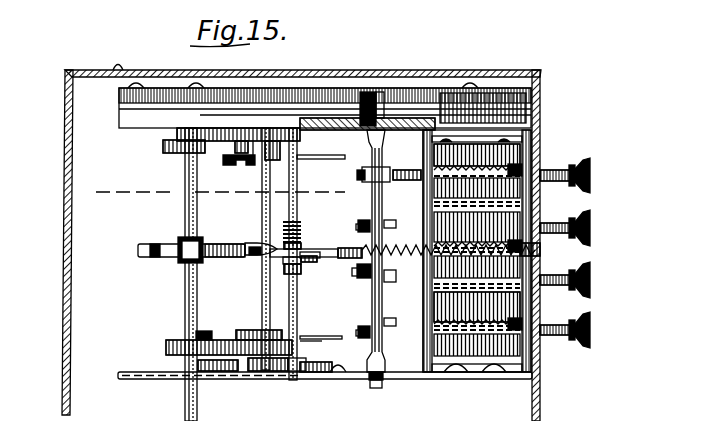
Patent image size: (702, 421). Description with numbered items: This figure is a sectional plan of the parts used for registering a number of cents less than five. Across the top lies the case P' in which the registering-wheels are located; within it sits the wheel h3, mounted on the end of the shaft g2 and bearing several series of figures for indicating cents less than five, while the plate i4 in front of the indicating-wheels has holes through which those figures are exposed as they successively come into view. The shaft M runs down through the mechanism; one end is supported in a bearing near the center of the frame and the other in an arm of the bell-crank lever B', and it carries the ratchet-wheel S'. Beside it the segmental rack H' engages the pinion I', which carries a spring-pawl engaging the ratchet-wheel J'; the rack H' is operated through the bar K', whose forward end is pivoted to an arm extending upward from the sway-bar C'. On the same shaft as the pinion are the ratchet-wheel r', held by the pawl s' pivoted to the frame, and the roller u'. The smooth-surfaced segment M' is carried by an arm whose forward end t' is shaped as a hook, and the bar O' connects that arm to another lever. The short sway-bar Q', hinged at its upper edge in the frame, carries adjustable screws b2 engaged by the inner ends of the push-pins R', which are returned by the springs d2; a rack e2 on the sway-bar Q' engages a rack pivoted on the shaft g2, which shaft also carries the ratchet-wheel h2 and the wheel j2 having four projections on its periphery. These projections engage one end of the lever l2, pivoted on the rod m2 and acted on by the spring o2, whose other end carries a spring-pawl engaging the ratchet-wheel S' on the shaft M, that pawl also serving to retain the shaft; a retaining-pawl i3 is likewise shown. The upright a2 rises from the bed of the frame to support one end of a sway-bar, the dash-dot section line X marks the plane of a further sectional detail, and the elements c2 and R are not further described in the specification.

The case P' is at (325, 106).
The shaft g2 is at (368, 96).
The plate i4 is at (382, 96).
The wheel h3 is at (412, 100).
The shaft M is at (174, 274).
The segment M' is at (210, 144).
The forward end t' is at (273, 249).
The short sway-bar Q' is at (389, 259).
The adjustable screws b2 is at (364, 222).
The bell-crank lever B' is at (229, 168).
The roller u' is at (247, 163).
The bar O' is at (321, 149).
The section line X is at (226, 192).
The ratchet-wheel S' is at (190, 250).
The spring o2 is at (299, 229).
The lever l2 is at (316, 245).
The wheel j2 is at (350, 258).
The rack e2 is at (358, 272).
The rod m2 is at (352, 262).
The sway-bar C' is at (276, 274).
The retaining-pawl i3 is at (408, 276).
The bar K' is at (321, 329).
The ratchet-wheel h2 is at (311, 324).
The segmental rack H' is at (229, 334).
The ratchet-wheel J' is at (253, 322).
The pinion I' is at (243, 363).
The ratchet-wheel r' is at (273, 379).
The pawl s' is at (323, 387).
The upright a2 is at (412, 380).
The coil c2 is at (477, 251).
The springs d2 is at (477, 235).
The push-pins R' is at (565, 202).
The knob R is at (565, 305).